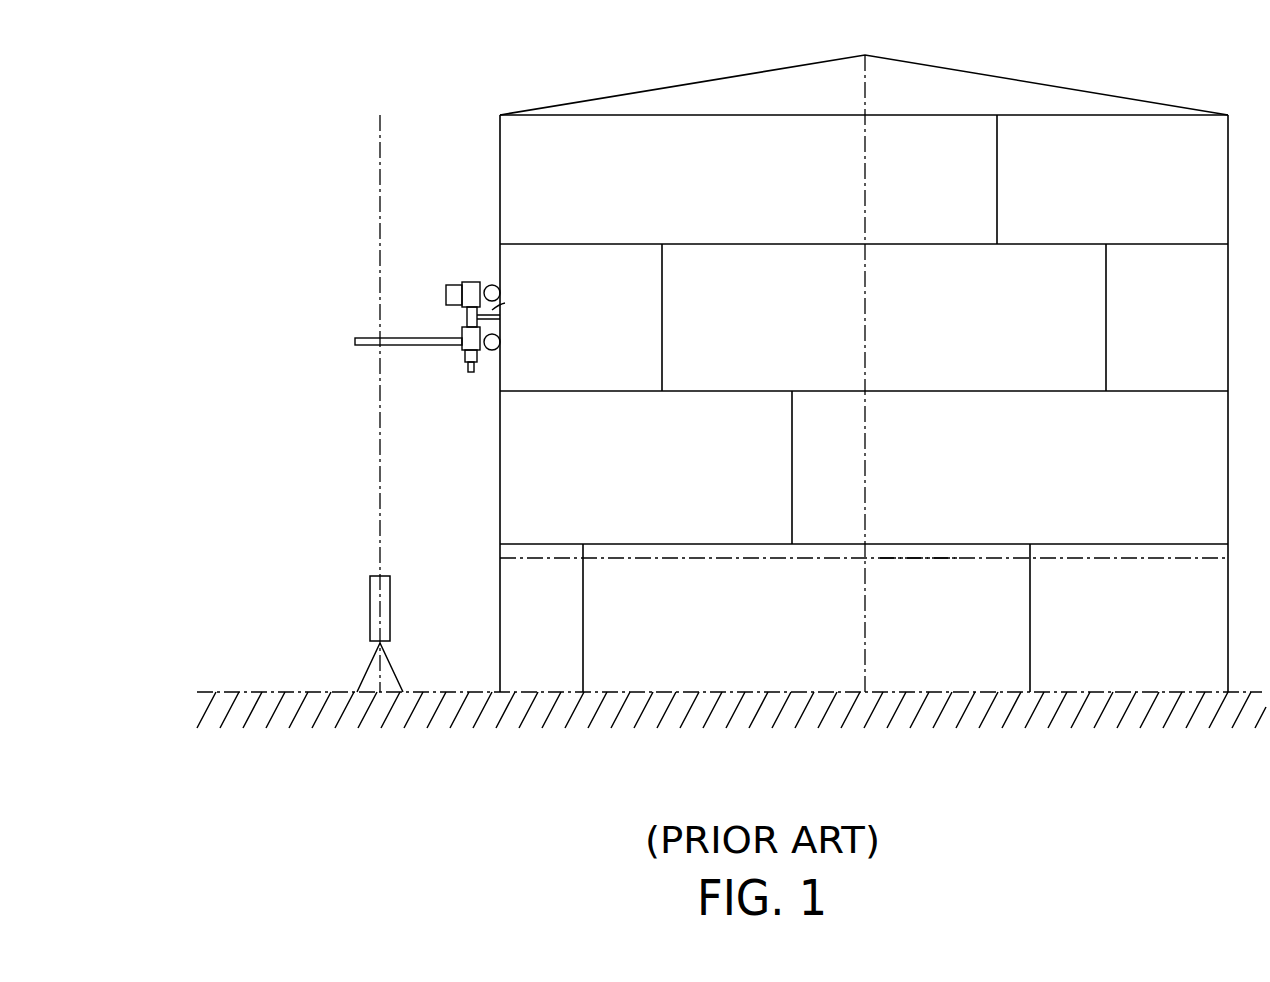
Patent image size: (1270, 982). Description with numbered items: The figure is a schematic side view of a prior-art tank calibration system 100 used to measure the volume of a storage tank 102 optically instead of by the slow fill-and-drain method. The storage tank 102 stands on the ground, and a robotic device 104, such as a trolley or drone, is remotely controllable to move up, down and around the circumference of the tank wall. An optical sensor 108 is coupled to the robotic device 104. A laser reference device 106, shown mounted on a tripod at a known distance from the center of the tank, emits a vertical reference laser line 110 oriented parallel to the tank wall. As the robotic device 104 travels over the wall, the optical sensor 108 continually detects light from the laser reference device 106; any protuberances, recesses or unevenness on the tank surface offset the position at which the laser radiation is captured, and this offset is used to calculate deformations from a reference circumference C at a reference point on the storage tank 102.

The tank calibration system 100 is at (312, 90).
The building wall 102 is at (1008, 78).
The robotic device 104 is at (438, 293).
The laser reference device 106 is at (370, 602).
The optical sensor 108 is at (395, 336).
The vertical reference laser line 110 is at (378, 480).
The reference line C is at (912, 560).